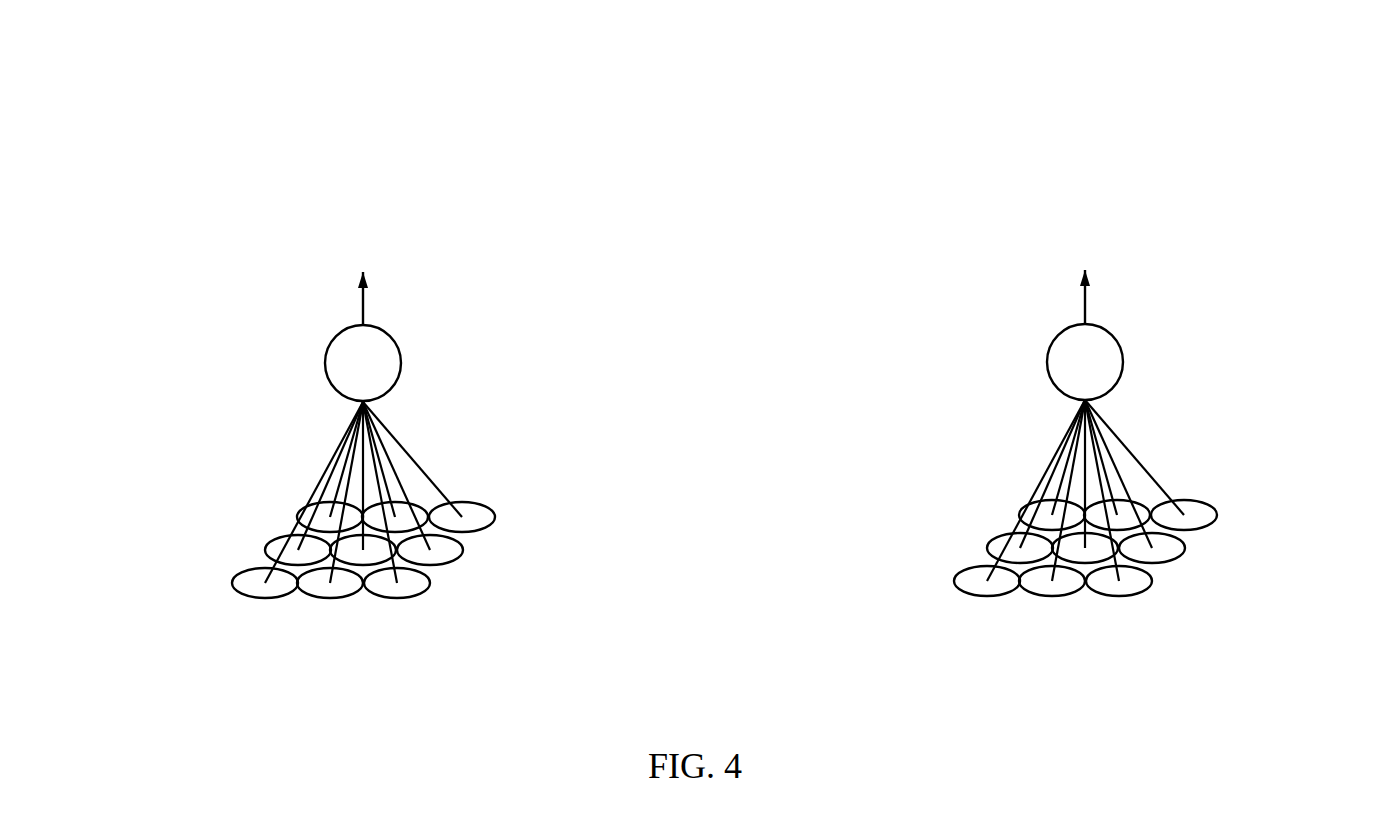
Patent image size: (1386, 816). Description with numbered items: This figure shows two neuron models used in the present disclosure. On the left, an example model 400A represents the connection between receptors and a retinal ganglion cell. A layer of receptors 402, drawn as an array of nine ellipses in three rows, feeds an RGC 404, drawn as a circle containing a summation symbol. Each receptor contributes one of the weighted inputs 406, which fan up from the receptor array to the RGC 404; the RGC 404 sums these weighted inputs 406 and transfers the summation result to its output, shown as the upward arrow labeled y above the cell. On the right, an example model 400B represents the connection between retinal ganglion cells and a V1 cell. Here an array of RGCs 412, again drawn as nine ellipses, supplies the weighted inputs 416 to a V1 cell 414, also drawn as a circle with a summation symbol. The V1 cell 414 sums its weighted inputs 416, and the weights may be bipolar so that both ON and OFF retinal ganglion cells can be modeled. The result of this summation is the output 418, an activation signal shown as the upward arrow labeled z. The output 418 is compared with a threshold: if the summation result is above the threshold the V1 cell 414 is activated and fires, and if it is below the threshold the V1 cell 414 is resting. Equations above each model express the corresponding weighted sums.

The example model 400A is at (338, 351).
The receptors 402 is at (252, 606).
The RGC 404 is at (327, 354).
The weighted inputs 406 is at (553, 527).
The example model 400B is at (1115, 341).
The RGCs 412 is at (957, 596).
The V1 cell 414 is at (1048, 370).
The weighted inputs 416 is at (1292, 528).
The output 418 is at (1137, 295).